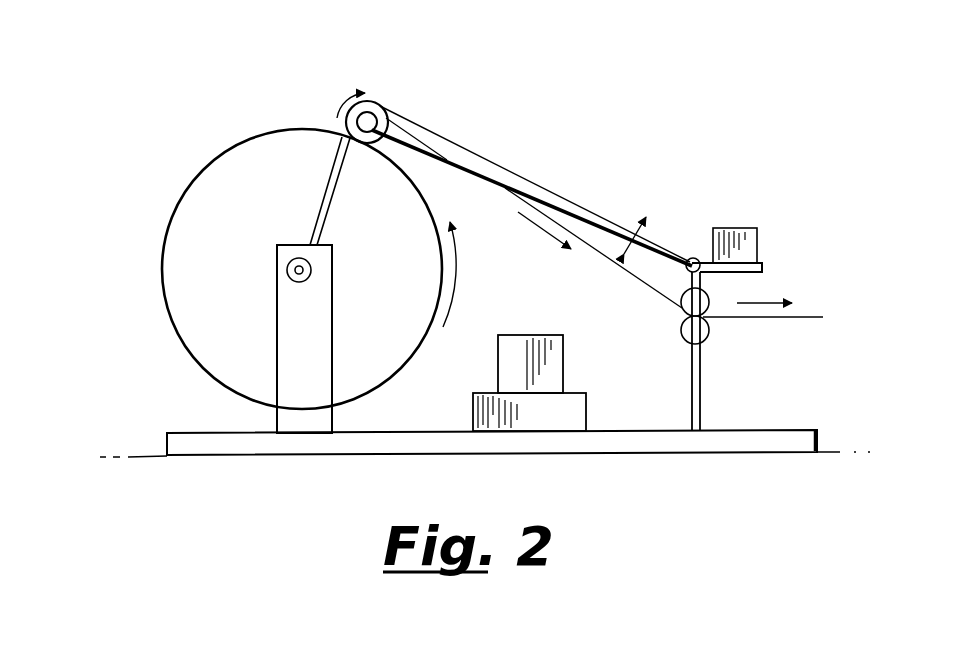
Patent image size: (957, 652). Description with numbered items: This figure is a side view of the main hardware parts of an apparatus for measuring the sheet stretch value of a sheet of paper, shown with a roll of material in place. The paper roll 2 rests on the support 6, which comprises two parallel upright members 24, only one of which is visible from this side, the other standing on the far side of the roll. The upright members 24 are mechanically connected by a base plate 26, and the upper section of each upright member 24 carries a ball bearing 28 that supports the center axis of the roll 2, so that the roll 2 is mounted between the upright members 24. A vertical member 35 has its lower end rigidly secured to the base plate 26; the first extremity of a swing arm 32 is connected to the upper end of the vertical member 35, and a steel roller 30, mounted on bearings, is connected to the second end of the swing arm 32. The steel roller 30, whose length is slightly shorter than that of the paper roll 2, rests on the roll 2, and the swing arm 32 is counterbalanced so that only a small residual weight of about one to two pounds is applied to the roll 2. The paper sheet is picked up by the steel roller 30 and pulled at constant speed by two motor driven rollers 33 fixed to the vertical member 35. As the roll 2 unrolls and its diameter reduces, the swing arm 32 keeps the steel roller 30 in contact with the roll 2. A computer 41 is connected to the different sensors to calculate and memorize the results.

The paper roll 2 is at (267, 148).
The support 6 is at (258, 416).
The upright member 24 is at (290, 336).
The base plate 26 is at (167, 445).
The ball bearing 28 is at (288, 266).
The steel roller 30 is at (378, 100).
The swing arm 32 is at (483, 173).
The motor driven rollers 33 is at (708, 306).
The vertical member 35 is at (702, 392).
The computer 41 is at (458, 383).